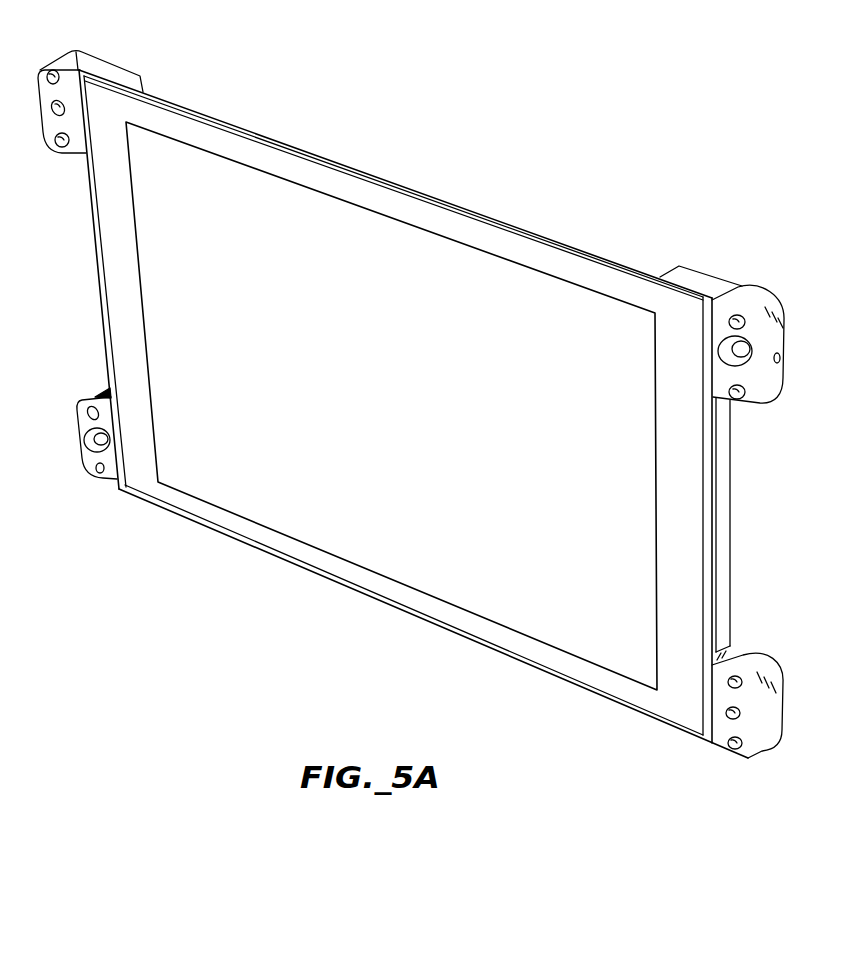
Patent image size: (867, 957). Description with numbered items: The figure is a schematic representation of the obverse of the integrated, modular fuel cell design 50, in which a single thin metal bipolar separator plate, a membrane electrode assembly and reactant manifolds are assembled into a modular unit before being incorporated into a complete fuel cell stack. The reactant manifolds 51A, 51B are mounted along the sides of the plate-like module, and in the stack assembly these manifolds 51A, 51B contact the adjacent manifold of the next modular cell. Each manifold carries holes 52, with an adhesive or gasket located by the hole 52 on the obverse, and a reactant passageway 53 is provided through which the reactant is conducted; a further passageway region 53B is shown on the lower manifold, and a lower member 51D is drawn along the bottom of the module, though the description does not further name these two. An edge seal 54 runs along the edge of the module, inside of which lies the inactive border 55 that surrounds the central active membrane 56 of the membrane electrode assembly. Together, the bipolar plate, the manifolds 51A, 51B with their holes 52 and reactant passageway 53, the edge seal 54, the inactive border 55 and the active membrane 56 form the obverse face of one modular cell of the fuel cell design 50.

The fuel cell design 50 is at (391, 416).
The reactant manifold 51A is at (733, 527).
The reactant manifold 51B is at (84, 478).
The bottom frame member 51D is at (668, 727).
The hole 52 is at (61, 106).
The reactant passageway 53 is at (85, 59).
The mounting bracket 53B is at (744, 714).
The edge seal 54 is at (88, 207).
The inactive border 55 is at (117, 253).
The active membrane 56 is at (153, 310).